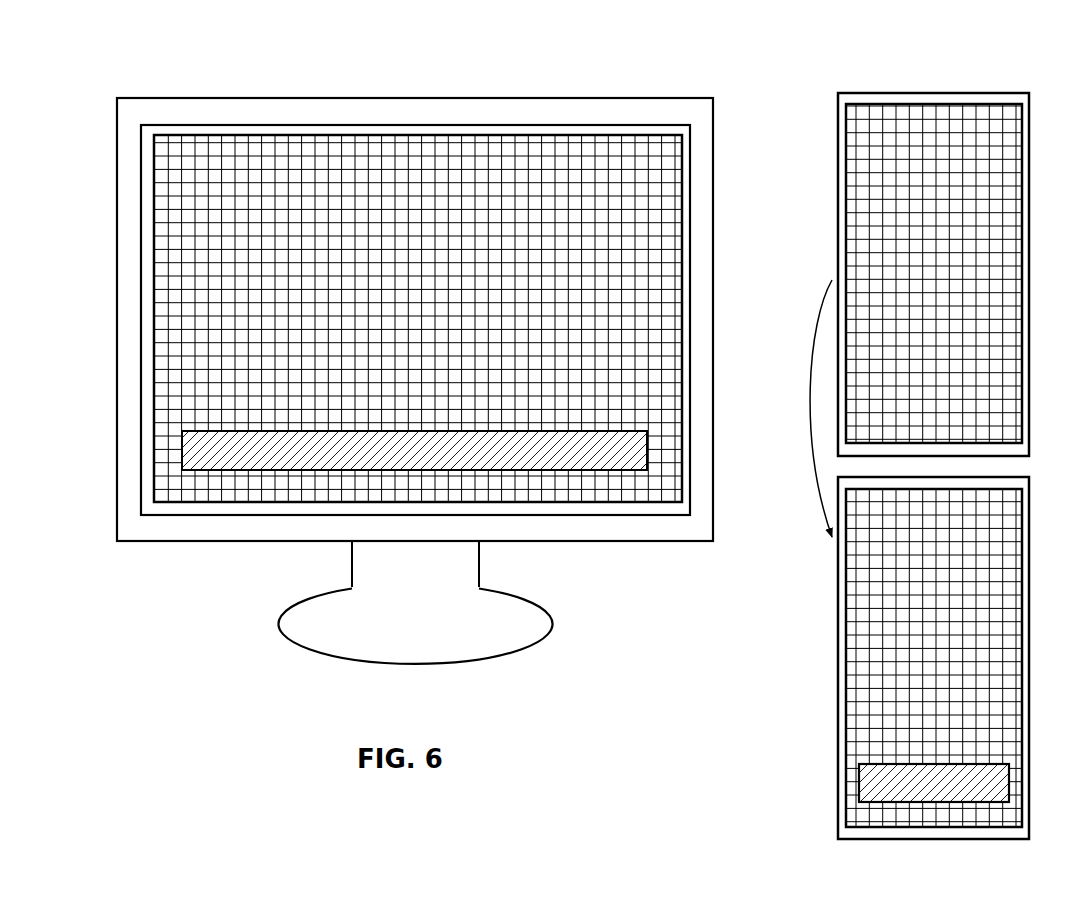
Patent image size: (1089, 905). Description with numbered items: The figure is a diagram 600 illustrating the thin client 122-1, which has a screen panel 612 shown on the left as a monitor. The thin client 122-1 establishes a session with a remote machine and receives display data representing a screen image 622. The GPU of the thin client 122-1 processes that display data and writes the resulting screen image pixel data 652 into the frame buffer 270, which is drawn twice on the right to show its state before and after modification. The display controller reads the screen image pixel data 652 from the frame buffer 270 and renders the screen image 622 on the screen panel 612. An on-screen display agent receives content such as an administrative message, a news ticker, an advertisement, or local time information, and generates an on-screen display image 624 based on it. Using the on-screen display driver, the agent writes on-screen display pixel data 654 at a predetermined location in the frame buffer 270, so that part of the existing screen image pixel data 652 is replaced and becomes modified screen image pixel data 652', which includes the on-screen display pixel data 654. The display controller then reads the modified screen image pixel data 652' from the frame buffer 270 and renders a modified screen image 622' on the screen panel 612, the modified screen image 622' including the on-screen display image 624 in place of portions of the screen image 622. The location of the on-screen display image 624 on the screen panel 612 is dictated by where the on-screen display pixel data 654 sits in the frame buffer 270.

The diagram 600 is at (142, 82).
The thin client 122-1 is at (550, 98).
The screen panel 612 is at (140, 215).
The screen image 622 is at (382, 318).
The modified screen image 622' is at (382, 319).
The on-screen display image 624 is at (270, 430).
The frame buffer 270 is at (1033, 157).
The screen image pixel data 652 is at (898, 273).
The modified screen image pixel data 652' is at (897, 658).
The on-screen display pixel data 654 is at (864, 777).